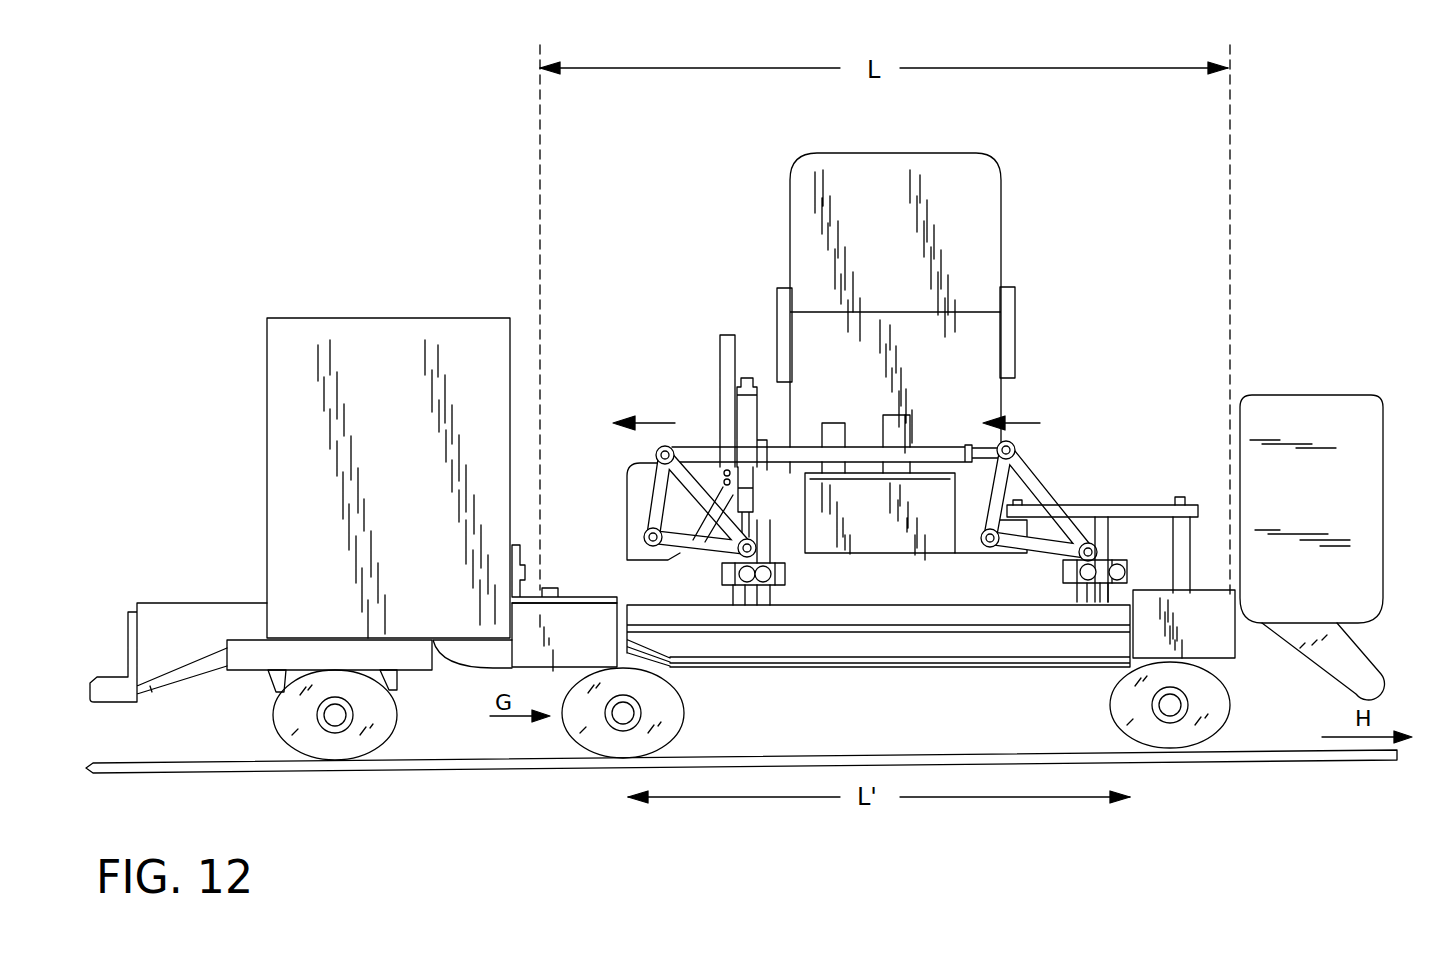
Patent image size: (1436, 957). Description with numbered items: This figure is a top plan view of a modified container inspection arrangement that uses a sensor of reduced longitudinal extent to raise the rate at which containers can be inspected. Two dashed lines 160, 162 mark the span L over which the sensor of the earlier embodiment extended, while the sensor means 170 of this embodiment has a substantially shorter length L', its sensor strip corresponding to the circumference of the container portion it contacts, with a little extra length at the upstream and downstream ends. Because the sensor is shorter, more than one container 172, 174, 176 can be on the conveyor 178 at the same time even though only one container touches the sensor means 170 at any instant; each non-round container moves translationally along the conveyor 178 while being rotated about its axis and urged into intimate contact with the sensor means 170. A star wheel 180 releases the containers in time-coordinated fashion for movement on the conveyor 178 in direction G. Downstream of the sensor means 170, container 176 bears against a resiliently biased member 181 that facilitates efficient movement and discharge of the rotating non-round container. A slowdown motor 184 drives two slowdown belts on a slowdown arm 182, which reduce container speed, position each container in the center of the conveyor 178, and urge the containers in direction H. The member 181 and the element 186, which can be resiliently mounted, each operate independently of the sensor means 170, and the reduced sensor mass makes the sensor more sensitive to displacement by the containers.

The dashed line 160 is at (541, 208).
The dashed line 162 is at (1228, 220).
The sensor means 170 is at (912, 662).
The container 172 is at (318, 752).
The container 174 is at (612, 745).
The container 176 is at (1188, 730).
The conveyor 178 is at (170, 748).
The star wheel 180 is at (267, 677).
The resiliently biased member 181 is at (1220, 632).
The slowdown arm 182 is at (1340, 656).
The slowdown motor 184 is at (1318, 407).
The resiliently mounted element 186 is at (612, 620).